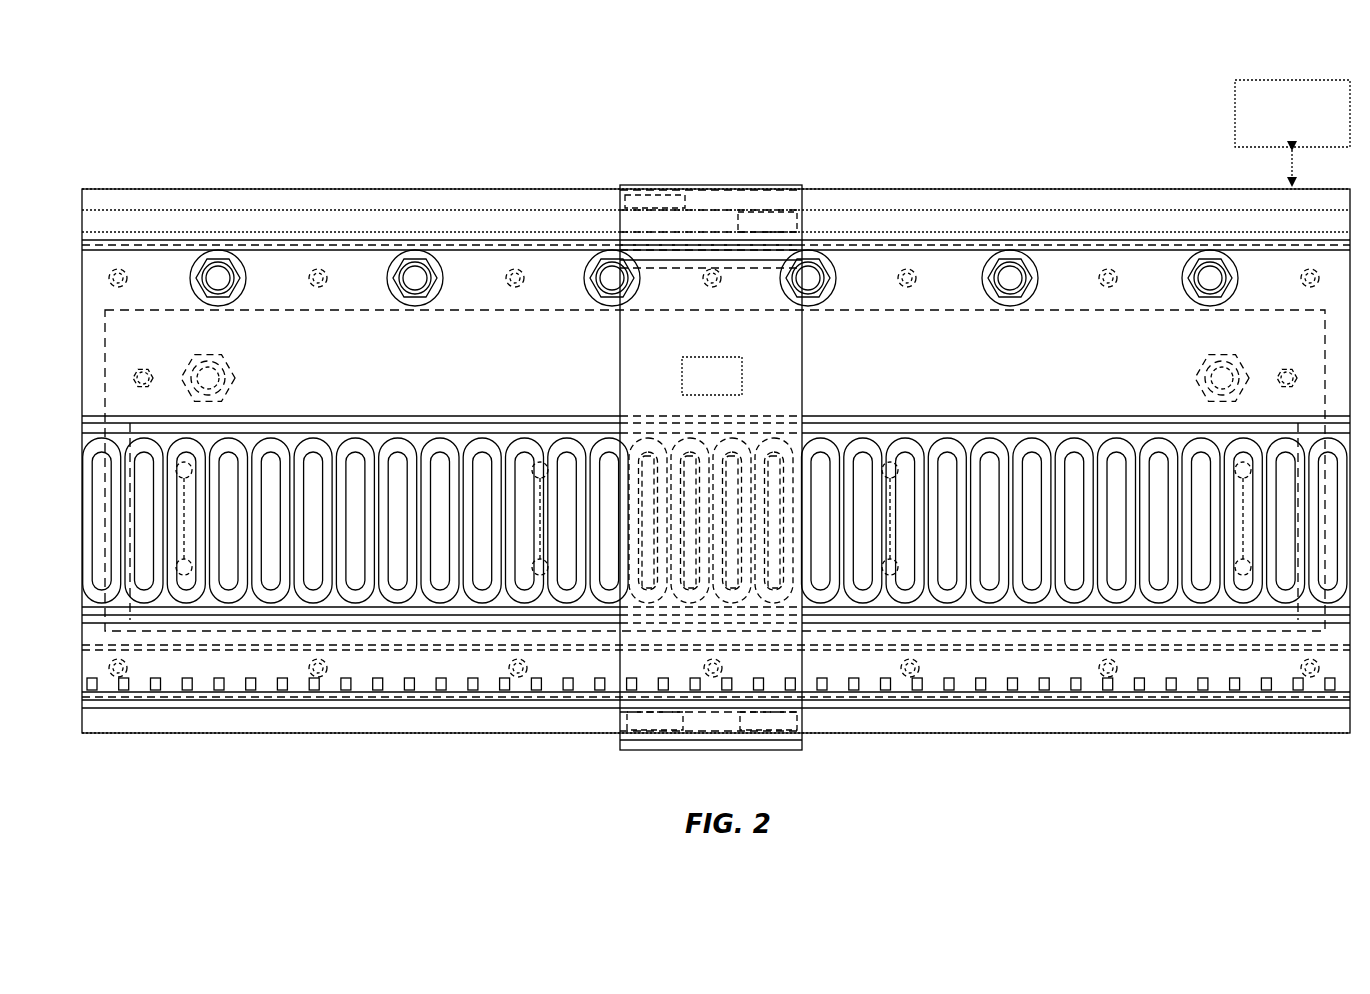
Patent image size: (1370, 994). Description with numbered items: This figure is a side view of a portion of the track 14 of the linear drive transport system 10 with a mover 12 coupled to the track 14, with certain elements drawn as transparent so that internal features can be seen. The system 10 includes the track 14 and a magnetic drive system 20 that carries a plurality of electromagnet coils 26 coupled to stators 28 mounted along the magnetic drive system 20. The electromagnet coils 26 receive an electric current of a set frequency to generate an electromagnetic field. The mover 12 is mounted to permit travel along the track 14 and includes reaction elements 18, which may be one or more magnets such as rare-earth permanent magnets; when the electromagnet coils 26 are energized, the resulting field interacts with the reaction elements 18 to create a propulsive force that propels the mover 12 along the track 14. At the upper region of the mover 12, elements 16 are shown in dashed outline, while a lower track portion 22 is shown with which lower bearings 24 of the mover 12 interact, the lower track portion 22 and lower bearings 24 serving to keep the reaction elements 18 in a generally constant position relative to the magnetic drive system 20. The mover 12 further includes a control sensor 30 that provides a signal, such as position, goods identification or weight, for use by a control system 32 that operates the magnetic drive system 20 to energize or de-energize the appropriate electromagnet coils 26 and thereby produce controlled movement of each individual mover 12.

The linear drive transport system 10 is at (180, 140).
The mover 12 is at (636, 186).
The track 14 is at (937, 186).
The upper guide blocks 16 is at (655, 200).
The reaction elements 18 is at (770, 440).
The magnetic drive system 20 is at (1118, 435).
The lower track portion 22 is at (915, 721).
The lower bearings 24 is at (655, 722).
The electromagnet coils 26 is at (397, 456).
The stators 28 is at (228, 456).
The control sensor 30 is at (712, 357).
The control system 32 is at (1297, 80).